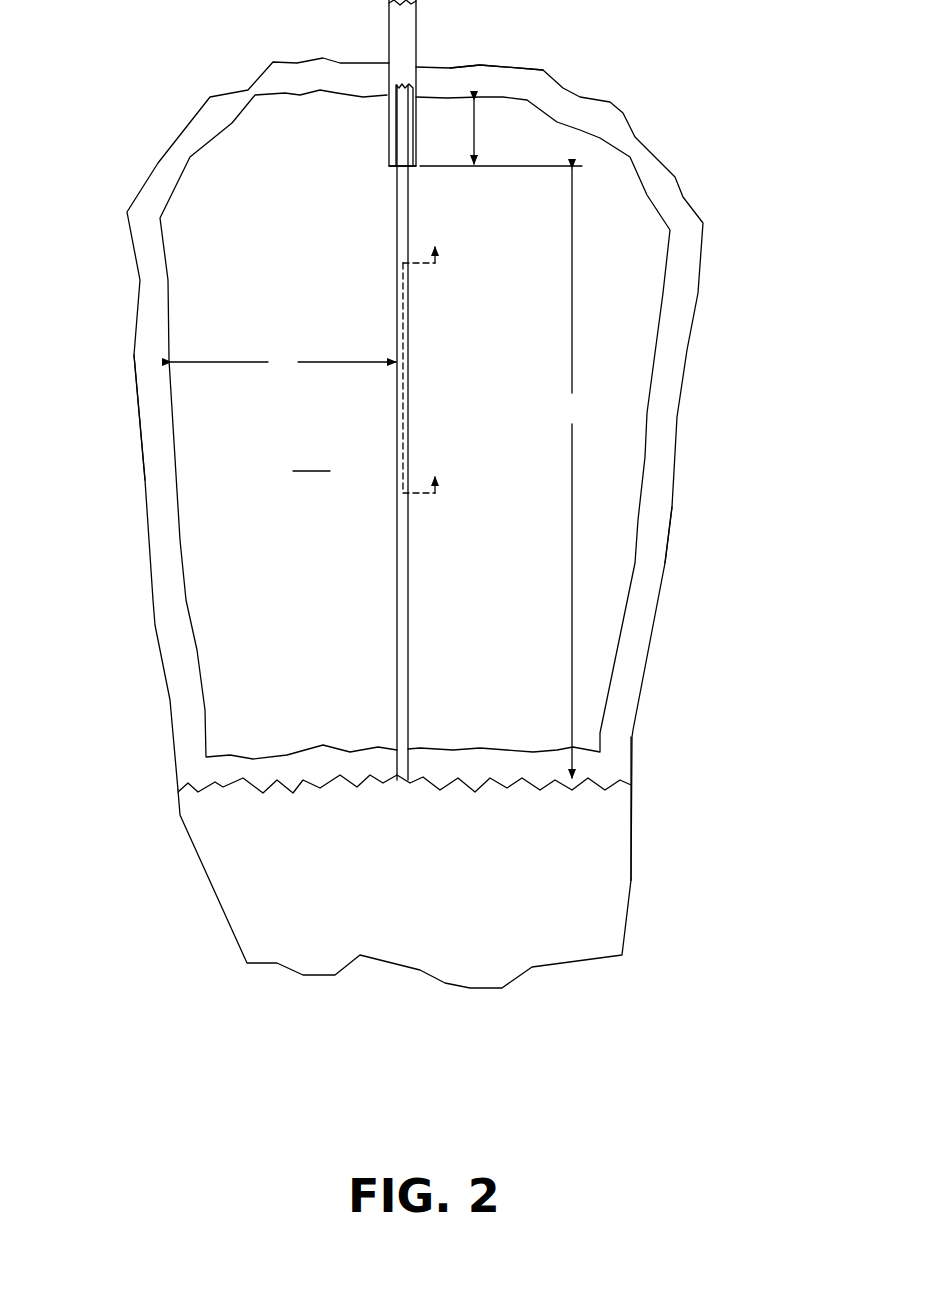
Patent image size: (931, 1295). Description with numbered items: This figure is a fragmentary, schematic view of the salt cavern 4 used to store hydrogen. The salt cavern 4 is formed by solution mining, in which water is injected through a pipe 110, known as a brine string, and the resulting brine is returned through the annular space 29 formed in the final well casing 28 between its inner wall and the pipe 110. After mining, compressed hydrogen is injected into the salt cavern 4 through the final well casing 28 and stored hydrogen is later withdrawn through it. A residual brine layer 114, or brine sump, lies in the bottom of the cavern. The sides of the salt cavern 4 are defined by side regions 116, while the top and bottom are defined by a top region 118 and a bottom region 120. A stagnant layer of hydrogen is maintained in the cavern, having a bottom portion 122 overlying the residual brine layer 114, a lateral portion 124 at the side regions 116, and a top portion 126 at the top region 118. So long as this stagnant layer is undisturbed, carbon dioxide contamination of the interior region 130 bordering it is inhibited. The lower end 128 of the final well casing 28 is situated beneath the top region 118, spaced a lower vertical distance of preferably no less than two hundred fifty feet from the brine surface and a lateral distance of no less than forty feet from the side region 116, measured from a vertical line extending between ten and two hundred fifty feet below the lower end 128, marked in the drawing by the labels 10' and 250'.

The salt cavern 4 is at (728, 158).
The final well casing 28 is at (400, 28).
The annular space 29 is at (393, 131).
The lower end 128 is at (397, 168).
The pipe 110 is at (410, 318).
The residual brine layer 114 is at (597, 858).
The side regions 116 is at (135, 325).
The top region 118 is at (575, 98).
The bottom region 120 is at (545, 968).
The bottom portion 122 is at (358, 768).
The lateral portion 124 is at (668, 433).
The top portion 126 is at (508, 75).
The interior region 130 is at (313, 459).
The upper position 10' is at (441, 259).
The lower position 250' is at (449, 381).